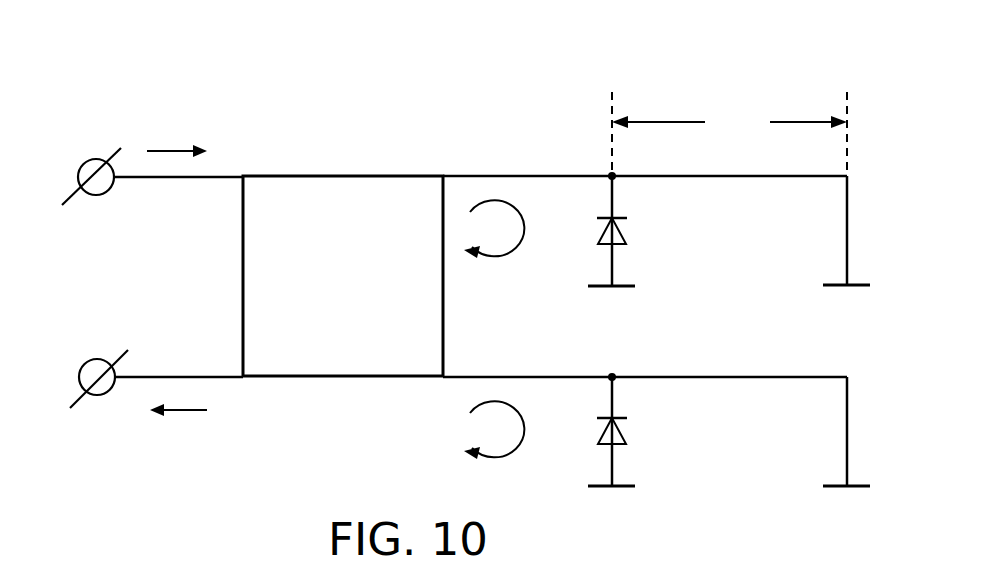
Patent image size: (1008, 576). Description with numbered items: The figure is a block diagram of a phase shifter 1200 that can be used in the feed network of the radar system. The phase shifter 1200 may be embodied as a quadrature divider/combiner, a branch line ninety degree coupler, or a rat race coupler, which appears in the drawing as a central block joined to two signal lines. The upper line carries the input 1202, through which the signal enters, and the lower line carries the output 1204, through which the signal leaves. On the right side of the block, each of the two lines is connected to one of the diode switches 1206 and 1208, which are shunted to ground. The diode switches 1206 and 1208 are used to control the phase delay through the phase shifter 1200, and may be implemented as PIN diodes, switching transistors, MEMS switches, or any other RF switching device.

The phase shifter 1200 is at (405, 66).
The input 1202 is at (221, 174).
The output 1204 is at (218, 380).
The diode switch 1206 is at (620, 229).
The diode switch 1208 is at (620, 430).